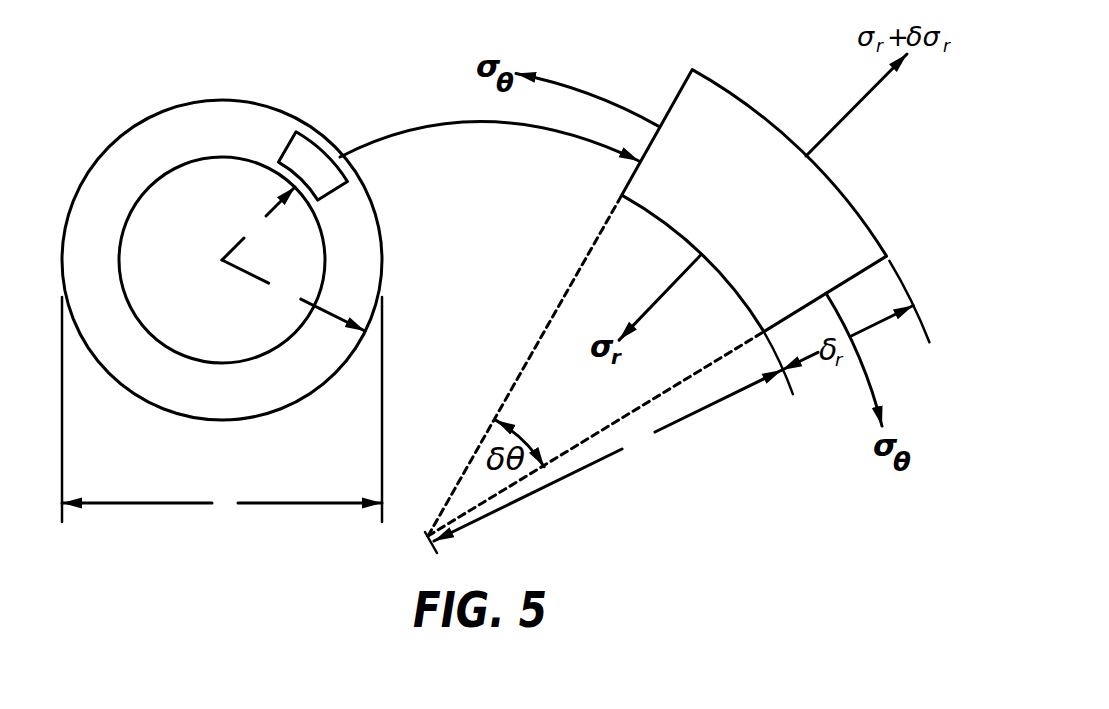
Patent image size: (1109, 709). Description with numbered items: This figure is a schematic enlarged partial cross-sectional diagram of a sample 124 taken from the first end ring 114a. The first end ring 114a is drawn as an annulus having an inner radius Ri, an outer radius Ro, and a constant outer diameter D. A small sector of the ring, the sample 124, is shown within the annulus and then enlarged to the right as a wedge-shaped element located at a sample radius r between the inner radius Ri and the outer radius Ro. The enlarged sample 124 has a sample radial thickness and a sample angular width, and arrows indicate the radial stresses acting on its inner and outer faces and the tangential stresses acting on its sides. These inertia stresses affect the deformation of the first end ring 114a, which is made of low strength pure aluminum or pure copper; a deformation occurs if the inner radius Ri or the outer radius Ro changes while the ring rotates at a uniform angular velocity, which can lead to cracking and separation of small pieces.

The first end ring 114a is at (146, 118).
The sample 124 is at (318, 160).
The inner radius Ri is at (258, 223).
The outer radius Ro is at (293, 295).
The constant outer diameter D is at (222, 409).
The sample radius r is at (603, 461).